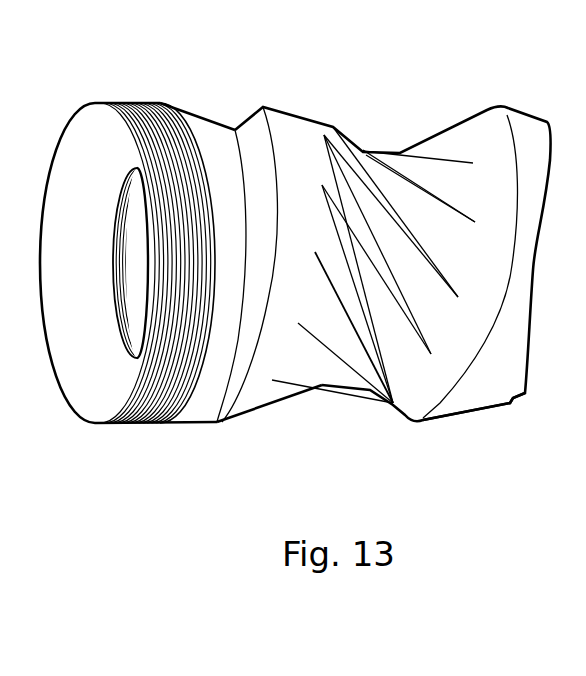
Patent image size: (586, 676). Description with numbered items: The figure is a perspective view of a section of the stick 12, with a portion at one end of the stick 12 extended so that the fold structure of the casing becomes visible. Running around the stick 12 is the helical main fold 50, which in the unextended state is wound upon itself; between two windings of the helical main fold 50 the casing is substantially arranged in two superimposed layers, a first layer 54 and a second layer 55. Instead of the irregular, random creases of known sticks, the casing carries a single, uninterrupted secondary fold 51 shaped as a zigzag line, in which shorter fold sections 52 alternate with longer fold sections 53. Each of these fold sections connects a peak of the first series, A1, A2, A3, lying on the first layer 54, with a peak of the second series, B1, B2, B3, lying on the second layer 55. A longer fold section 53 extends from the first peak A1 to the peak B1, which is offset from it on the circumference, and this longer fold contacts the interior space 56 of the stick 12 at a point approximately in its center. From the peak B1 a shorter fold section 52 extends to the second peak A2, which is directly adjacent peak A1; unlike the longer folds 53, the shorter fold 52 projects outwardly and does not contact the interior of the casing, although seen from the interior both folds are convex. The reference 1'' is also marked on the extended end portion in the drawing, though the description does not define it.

The stick 12 is at (126, 101).
The interior space 56 is at (121, 262).
The second layer 55 is at (211, 128).
The first layer 54 is at (252, 128).
The helical main fold 50 is at (512, 132).
The secondary fold 51 is at (447, 414).
The shorter fold section 52 is at (368, 262).
The longer fold section 53 is at (372, 302).
The first peak of second series B1 is at (320, 183).
The peak of second series B2 is at (322, 137).
The peak of second series B3 is at (335, 126).
The first peak of first series A1 is at (401, 397).
The second peak of first series A2 is at (387, 343).
The peak of first series A3 is at (458, 300).
The container wall 1'' is at (474, 437).